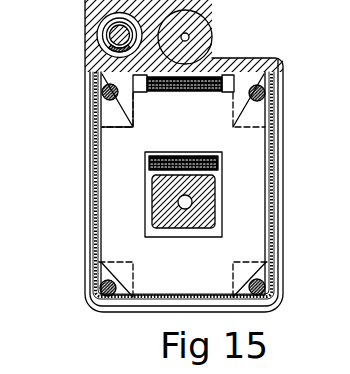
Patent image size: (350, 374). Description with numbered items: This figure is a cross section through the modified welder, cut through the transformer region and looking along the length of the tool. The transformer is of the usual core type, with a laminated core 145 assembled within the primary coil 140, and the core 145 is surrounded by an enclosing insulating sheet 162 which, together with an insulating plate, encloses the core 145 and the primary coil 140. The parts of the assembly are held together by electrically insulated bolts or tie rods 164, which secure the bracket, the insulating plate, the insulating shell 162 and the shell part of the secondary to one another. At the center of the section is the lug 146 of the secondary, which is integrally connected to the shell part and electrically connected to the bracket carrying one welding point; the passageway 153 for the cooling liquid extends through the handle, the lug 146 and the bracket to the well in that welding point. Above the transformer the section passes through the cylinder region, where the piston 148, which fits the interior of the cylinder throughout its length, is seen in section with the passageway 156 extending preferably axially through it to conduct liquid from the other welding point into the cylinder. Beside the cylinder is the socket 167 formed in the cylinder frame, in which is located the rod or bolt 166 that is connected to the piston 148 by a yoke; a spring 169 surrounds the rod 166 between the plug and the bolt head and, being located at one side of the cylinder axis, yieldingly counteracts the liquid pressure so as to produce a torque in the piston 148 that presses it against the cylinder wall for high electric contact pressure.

The primary coil 140 is at (96, 74).
The laminated core 145 is at (120, 162).
The lug 146 is at (210, 212).
The piston 148 is at (193, 25).
The passageway 153 is at (187, 199).
The passageway 156 is at (189, 37).
The enclosing insulating sheet 162 is at (276, 158).
The electrically insulated bolts or tie rods 164 is at (108, 94).
The rod or bolt 166 is at (103, 32).
The socket 167 is at (102, 20).
The spring 169 is at (109, 41).